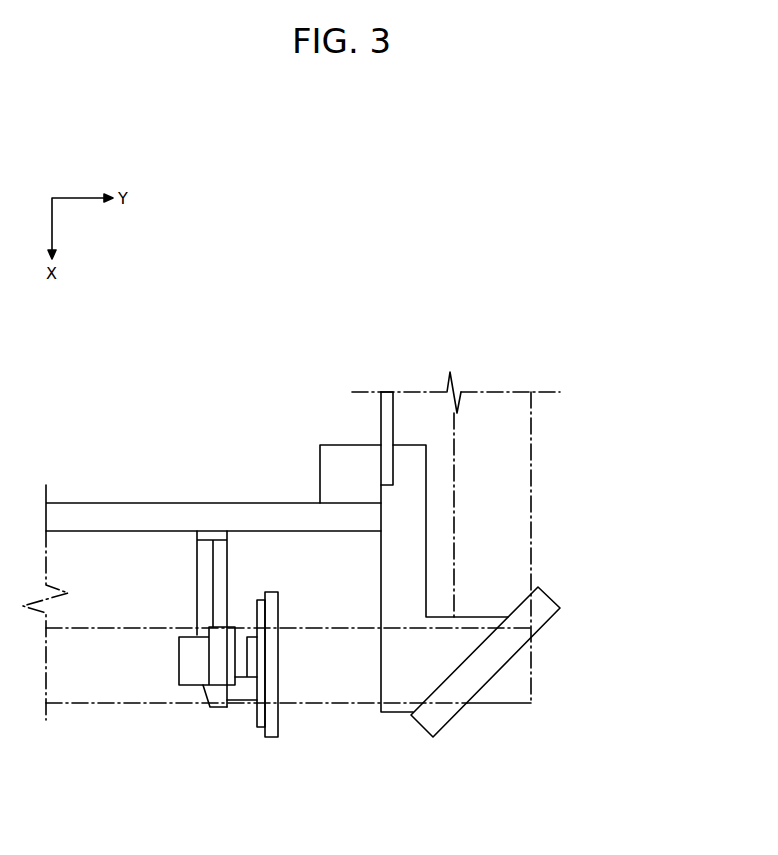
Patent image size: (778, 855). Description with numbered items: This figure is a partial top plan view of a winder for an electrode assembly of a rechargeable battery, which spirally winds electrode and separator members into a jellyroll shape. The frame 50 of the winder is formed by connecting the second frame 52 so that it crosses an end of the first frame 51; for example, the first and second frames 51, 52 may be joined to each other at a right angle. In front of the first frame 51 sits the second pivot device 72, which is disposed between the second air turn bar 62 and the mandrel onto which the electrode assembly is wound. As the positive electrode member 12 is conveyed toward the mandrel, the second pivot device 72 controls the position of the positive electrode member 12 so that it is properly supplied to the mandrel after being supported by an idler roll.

The positive electrode member 12 is at (531, 493).
The frame 50 is at (246, 284).
The first frame 51 is at (256, 503).
The second frame 52 is at (387, 422).
The second air turn bar 62 is at (548, 620).
The second pivot device 72 is at (264, 748).